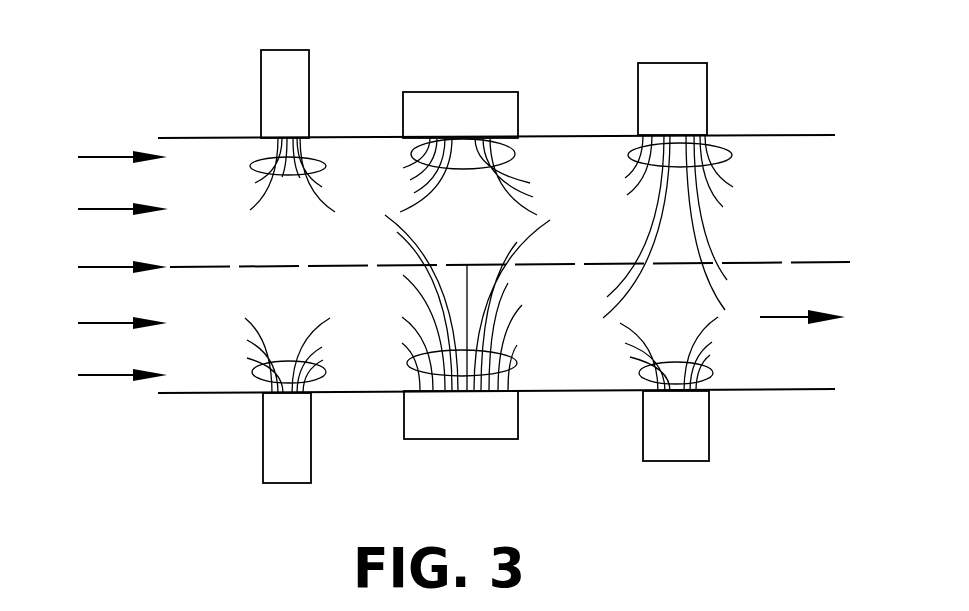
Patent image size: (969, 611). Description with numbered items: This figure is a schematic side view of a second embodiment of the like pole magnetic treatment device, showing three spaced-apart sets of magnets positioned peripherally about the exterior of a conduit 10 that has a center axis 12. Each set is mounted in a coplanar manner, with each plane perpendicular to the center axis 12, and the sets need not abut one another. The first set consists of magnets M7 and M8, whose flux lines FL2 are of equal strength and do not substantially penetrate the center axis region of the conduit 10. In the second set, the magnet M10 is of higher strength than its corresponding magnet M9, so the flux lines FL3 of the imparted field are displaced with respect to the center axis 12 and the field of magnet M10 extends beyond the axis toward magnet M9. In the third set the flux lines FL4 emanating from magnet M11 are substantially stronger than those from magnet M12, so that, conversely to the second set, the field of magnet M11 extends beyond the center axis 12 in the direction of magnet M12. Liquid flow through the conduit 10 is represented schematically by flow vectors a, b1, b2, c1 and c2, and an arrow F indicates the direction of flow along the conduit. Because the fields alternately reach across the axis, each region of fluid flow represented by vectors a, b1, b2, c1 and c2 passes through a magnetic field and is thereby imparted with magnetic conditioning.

The conduit 10 is at (778, 135).
The center axis 12 is at (748, 262).
The magnet M7 is at (307, 50).
The magnet M8 is at (310, 448).
The magnet M9 is at (505, 93).
The magnet M10 is at (513, 440).
The magnet M11 is at (697, 63).
The magnet M12 is at (698, 460).
The flux lines FL2 is at (257, 165).
The flux lines FL3 is at (412, 155).
The flux lines FL4 is at (733, 153).
The liquid flow vector c1 is at (102, 156).
The liquid flow vector b1 is at (102, 212).
The liquid flow vector a is at (445, 263).
The liquid flow vector b2 is at (102, 330).
The liquid flow vector c2 is at (102, 380).
The force direction F is at (802, 304).